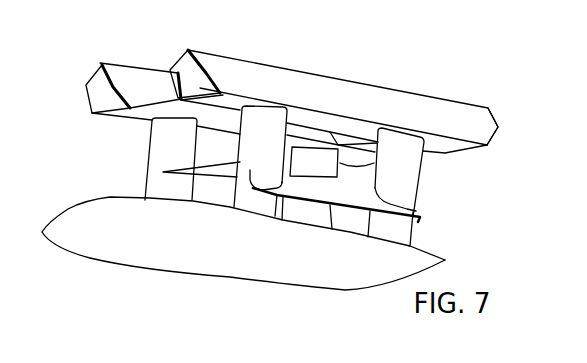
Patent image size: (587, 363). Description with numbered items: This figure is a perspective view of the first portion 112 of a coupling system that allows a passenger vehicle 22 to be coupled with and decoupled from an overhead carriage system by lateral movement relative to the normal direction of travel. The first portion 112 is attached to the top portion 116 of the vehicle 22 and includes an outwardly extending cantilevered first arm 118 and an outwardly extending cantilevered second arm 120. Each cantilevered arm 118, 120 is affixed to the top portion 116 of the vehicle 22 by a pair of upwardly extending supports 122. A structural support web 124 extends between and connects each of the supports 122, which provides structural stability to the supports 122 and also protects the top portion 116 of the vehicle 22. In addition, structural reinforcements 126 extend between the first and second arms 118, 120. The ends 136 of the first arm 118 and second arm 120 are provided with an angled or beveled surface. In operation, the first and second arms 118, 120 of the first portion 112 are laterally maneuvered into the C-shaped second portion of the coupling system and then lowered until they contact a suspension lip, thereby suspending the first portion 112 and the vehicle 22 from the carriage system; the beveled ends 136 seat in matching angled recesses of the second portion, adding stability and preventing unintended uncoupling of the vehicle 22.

The passenger vehicle 22 is at (82, 190).
The first portion 112 is at (521, 120).
The top portion 116 is at (427, 255).
The first arm 118 is at (388, 85).
The second arm 120 is at (150, 68).
The upwardly extending supports 122 is at (413, 178).
The structural support web 124 is at (209, 170).
The structural reinforcements 126 is at (214, 90).
The ends 136 is at (112, 78).